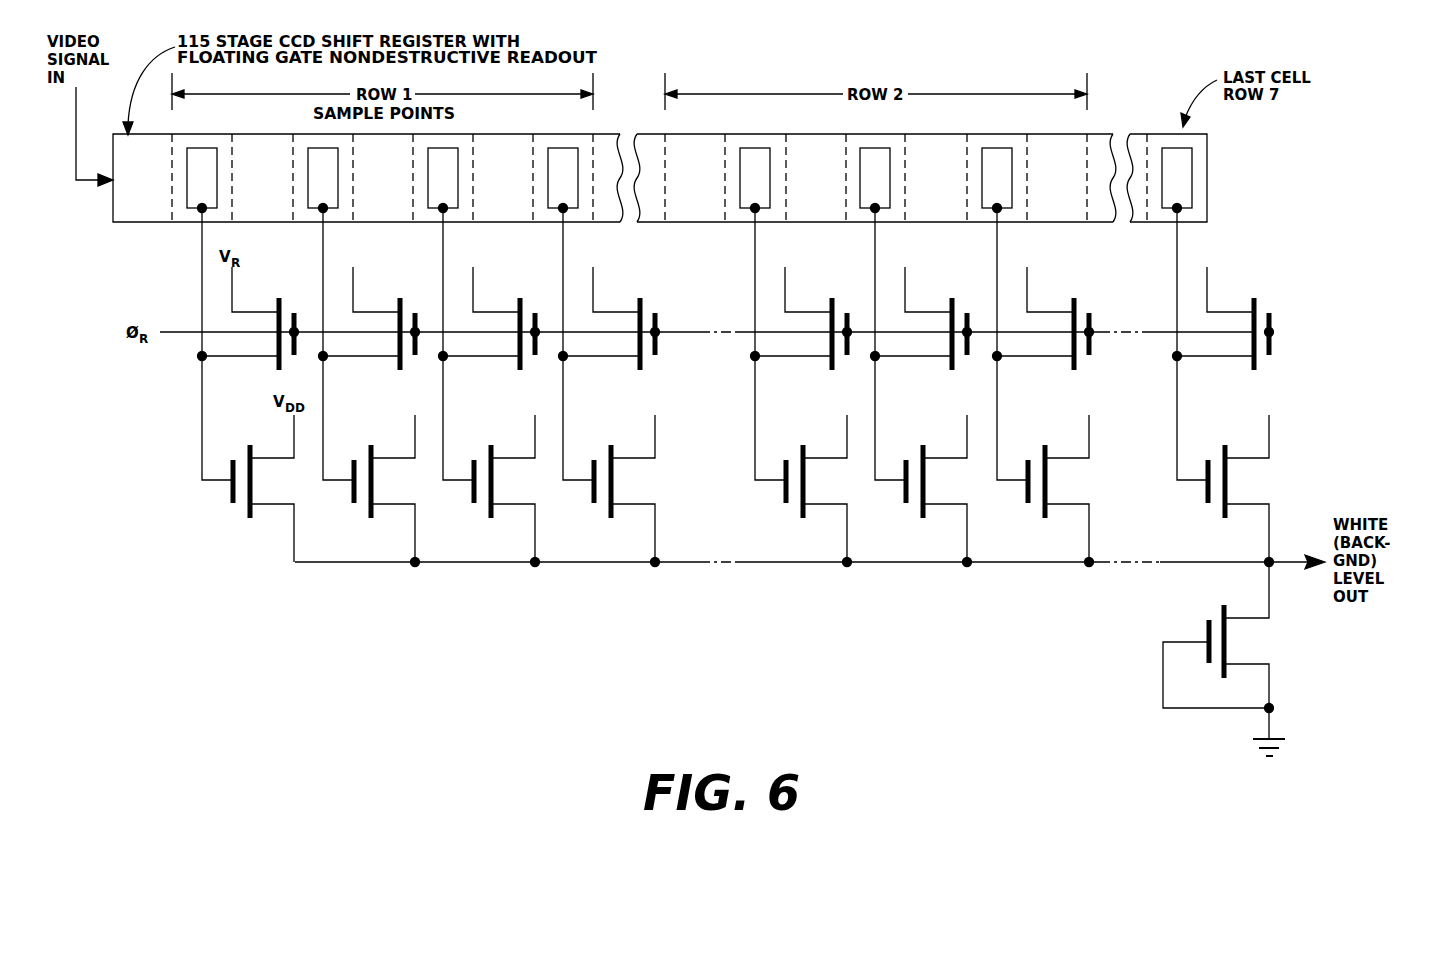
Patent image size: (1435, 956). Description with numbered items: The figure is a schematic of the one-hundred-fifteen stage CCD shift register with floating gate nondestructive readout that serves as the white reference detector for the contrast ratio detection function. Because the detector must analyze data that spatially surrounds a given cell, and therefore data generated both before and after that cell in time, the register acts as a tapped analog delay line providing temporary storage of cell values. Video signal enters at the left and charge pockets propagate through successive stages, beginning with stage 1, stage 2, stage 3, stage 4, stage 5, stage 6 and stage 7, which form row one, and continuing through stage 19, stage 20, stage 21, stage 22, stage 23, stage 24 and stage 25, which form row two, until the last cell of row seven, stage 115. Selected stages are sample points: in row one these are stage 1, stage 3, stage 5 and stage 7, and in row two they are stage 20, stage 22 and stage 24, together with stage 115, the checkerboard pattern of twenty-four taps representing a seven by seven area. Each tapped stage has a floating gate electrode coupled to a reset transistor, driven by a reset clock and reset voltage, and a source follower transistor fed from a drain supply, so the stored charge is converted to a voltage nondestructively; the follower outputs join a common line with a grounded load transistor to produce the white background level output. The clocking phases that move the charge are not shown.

The stage 1 of CCD register 1 is at (235, 348).
The stage 2 of CCD register 2 is at (249, 178).
The stage 3 of CCD register 3 is at (356, 350).
The stage 4 of CCD register 4 is at (370, 178).
The stage 5 of CCD register 5 is at (476, 350).
The stage 6 of CCD register 6 is at (490, 178).
The stage 7 of CCD register 7 is at (596, 350).
The stage 19 of CCD register 19 is at (685, 178).
The stage 20 of CCD register 20 is at (788, 350).
The stage 21 of CCD register 21 is at (805, 178).
The stage 22 of CCD register 22 is at (909, 350).
The stage 23 of CCD register 23 is at (925, 178).
The stage 24 of CCD register 24 is at (1030, 350).
The stage 25 of CCD register 25 is at (1057, 178).
The stage 115 of CCD register 115 is at (1210, 350).